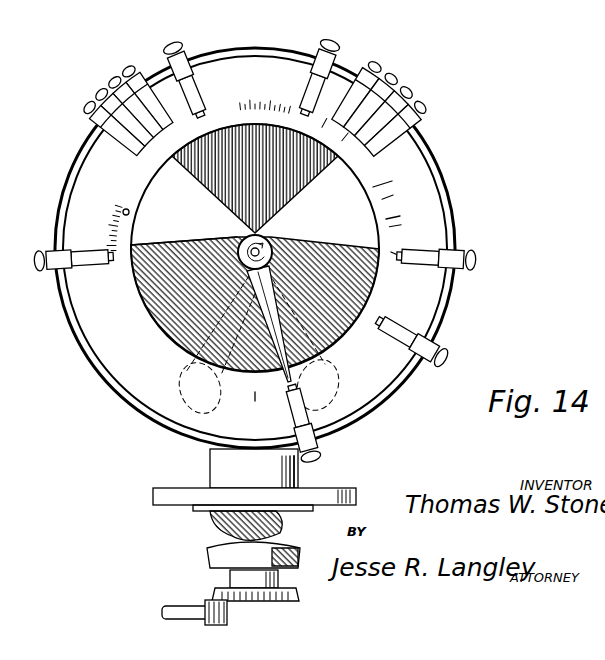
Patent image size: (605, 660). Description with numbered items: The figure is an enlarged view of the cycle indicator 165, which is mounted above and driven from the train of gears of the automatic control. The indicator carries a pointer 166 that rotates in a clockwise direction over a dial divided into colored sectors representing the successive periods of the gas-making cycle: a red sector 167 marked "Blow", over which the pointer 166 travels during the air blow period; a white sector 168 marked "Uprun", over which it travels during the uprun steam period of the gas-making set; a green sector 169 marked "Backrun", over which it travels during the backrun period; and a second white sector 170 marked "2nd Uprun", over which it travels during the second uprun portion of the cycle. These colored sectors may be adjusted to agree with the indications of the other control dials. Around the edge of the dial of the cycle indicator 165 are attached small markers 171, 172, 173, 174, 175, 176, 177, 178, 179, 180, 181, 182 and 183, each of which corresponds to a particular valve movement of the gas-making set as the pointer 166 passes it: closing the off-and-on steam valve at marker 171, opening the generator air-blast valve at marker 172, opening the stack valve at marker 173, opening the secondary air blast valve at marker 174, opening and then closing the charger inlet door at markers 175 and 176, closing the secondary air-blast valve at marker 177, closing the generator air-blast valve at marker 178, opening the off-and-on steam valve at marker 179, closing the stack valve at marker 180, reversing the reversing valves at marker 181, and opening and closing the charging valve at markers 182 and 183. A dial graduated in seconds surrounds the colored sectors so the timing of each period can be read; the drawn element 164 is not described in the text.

The adjusting screw 164 is at (55, 273).
The cycle indicator 165 is at (72, 385).
The pointer 166 is at (118, 198).
The red sector 167 is at (251, 112).
The white sector 168 is at (400, 196).
The green sector 169 is at (66, 312).
The second white sector 170 is at (140, 214).
The small marker 171 is at (87, 114).
The small marker 172 is at (98, 96).
The small marker 173 is at (105, 88).
The small marker 174 is at (136, 50).
The small marker 175 is at (186, 47).
The small marker 176 is at (337, 44).
The small marker 177 is at (380, 70).
The small marker 178 is at (393, 84).
The small marker 179 is at (408, 98).
The small marker 180 is at (424, 110).
The small marker 181 is at (458, 274).
The small marker 182 is at (436, 346).
The small marker 183 is at (324, 462).